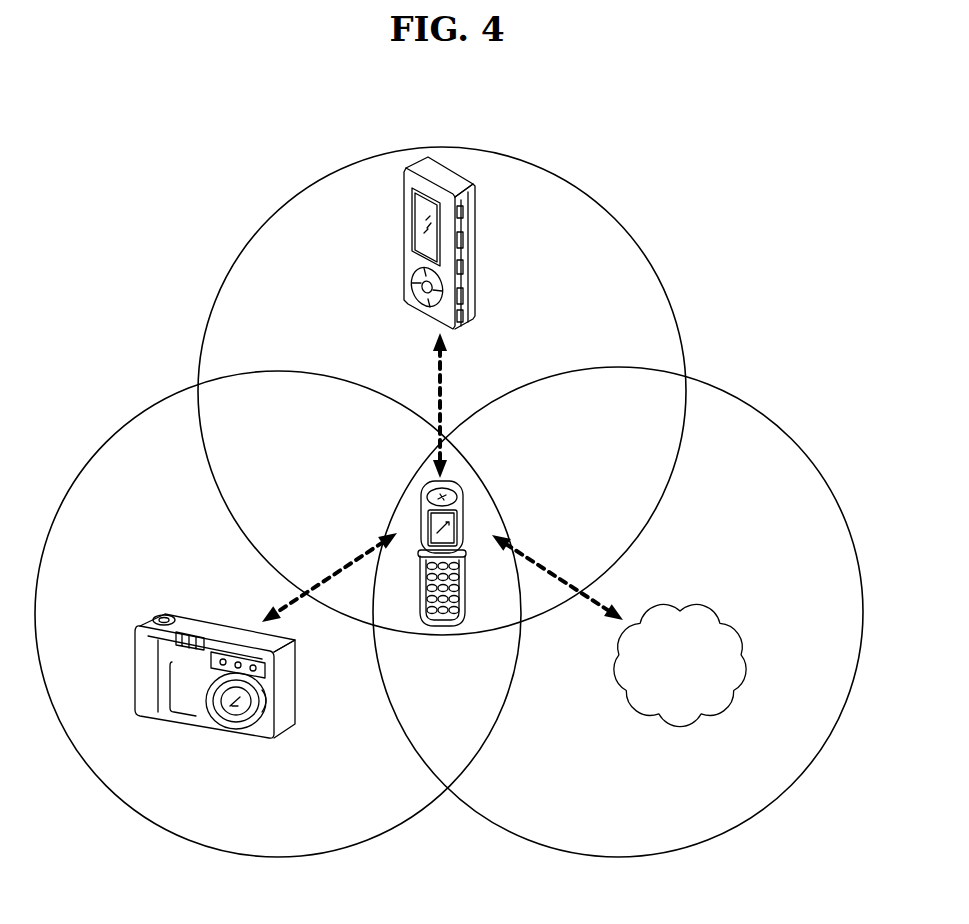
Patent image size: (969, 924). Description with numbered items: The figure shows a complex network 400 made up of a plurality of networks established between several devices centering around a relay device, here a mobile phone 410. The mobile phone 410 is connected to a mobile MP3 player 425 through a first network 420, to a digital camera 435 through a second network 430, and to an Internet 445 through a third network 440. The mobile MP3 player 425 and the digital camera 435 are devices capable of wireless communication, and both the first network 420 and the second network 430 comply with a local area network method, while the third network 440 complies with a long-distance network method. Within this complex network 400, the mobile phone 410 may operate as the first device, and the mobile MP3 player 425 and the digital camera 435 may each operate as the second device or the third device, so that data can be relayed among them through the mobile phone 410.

The complex network 400 is at (762, 268).
The mobile phone 410 is at (462, 494).
The first network 420 is at (603, 205).
The mobile MP3 player 425 is at (478, 229).
The second network 430 is at (108, 438).
The digital camera 435 is at (148, 612).
The third network 440 is at (796, 433).
The Internet 445 is at (688, 600).